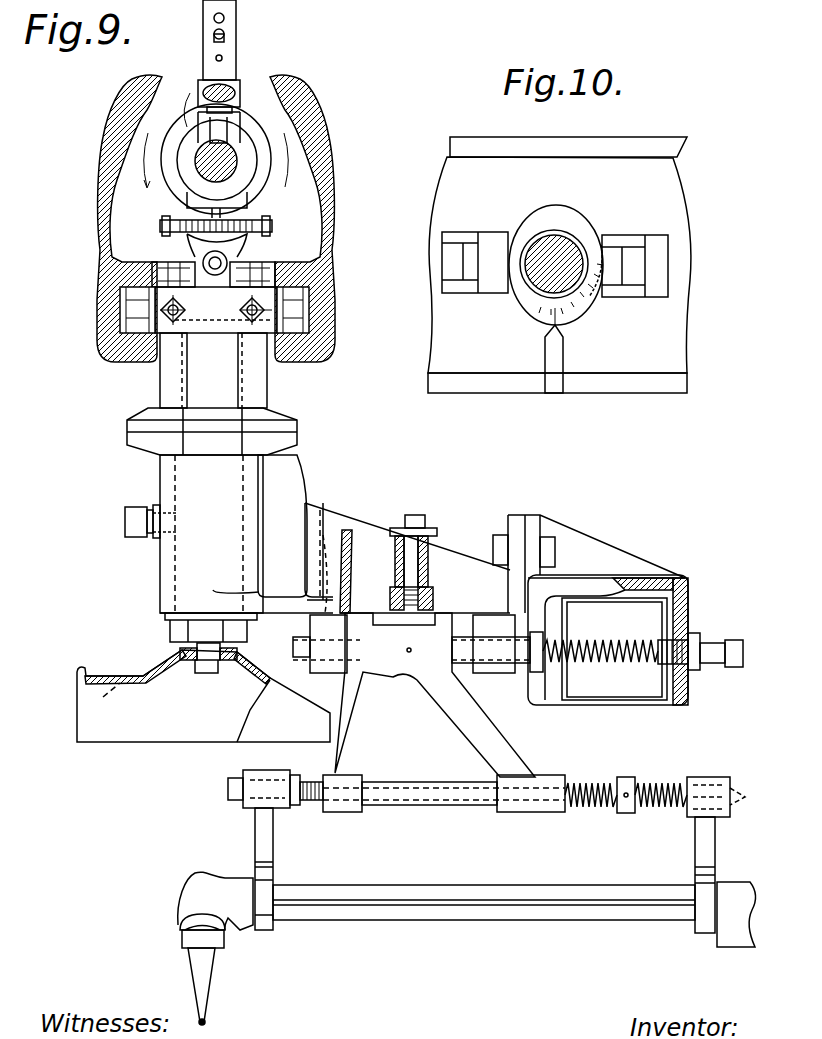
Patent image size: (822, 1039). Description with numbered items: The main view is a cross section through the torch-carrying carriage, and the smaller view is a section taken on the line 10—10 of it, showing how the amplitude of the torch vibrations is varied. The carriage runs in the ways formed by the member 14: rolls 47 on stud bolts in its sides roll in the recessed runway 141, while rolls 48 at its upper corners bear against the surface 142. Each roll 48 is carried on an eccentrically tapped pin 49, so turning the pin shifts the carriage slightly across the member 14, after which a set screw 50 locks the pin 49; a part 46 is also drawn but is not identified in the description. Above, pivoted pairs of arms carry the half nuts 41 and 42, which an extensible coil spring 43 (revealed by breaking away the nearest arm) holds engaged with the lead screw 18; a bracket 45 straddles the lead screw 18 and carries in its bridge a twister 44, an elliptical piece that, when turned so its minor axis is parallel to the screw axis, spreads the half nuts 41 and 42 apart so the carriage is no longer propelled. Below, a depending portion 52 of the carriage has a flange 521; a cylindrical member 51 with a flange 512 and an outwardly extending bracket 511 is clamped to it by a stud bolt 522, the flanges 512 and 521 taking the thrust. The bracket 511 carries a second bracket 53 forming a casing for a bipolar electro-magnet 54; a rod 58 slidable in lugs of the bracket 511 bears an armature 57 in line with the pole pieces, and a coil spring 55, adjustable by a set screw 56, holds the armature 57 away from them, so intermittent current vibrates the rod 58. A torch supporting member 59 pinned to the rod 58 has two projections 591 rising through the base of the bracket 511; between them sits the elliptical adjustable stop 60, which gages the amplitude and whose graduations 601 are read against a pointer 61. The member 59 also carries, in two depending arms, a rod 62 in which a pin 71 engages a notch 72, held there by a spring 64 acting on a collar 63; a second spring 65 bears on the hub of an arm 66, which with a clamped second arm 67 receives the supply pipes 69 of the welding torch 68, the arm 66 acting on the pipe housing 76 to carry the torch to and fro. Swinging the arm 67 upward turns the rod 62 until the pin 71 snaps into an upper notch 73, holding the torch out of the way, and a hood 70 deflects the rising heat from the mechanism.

In FIG. 9, the section line 10 is at (453, 565).
In FIG. 9, the member 14 is at (100, 152).
In FIG. 9, the surface 142 is at (150, 272).
In FIG. 9, the recessed runway 141 is at (120, 305).
In FIG. 9, the lead screw 18 is at (240, 160).
In FIG. 9, the half nut member 41 is at (242, 152).
In FIG. 9, the half nut member 42 is at (196, 140).
In FIG. 9, the extensible coil spring 43 is at (240, 240).
In FIG. 9, the twister 44 is at (240, 115).
In FIG. 9, the bracket 45 is at (230, 118).
In FIG. 9, the pinion 46 is at (195, 262).
In FIG. 9, the roll 47 is at (309, 322).
In FIG. 9, the roll 48 is at (277, 280).
In FIG. 9, the pin 49 is at (165, 352).
In FIG. 9, the set screw 50 is at (250, 315).
In FIG. 9, the cylindrical member 51 is at (165, 578).
In FIG. 9, the bracket 511 is at (330, 535).
In FIG. 10, the bracket 511 is at (633, 380).
In FIG. 9, the flange 512 is at (148, 440).
In FIG. 9, the depending portion 52 is at (268, 408).
In FIG. 9, the flange 521 is at (282, 424).
In FIG. 9, the stud bolt 522 is at (140, 528).
In FIG. 9, the second bracket 53 is at (592, 555).
In FIG. 9, the bipolar electro-magnet 54 is at (665, 683).
In FIG. 9, the coil spring 55 is at (610, 660).
In FIG. 9, the set screw 56 is at (765, 628).
In FIG. 9, the armature 57 is at (536, 655).
In FIG. 9, the rod 58 is at (302, 668).
In FIG. 9, the torch supporting member 59 is at (370, 560).
In FIG. 9, the projection 591 is at (440, 555).
In FIG. 10, the projection 591 is at (470, 270).
In FIG. 9, the adjustable stop 60 is at (418, 545).
In FIG. 10, the adjustable stop 60 is at (577, 225).
In FIG. 10, the graduations 601 is at (583, 307).
In FIG. 10, the pointer 61 is at (555, 360).
In FIG. 9, the rod 62 is at (437, 792).
In FIG. 9, the collar 63 is at (627, 812).
In FIG. 9, the spring 64 is at (592, 810).
In FIG. 9, the second spring 65 is at (655, 810).
In FIG. 9, the arm 66 is at (712, 838).
In FIG. 9, the second arm 67 is at (268, 832).
In FIG. 9, the welding torch 68 is at (238, 912).
In FIG. 9, the supply pipes 69 is at (495, 895).
In FIG. 9, the hood 70 is at (188, 722).
In FIG. 9, the pin 71 is at (323, 797).
In FIG. 9, the notch 72 is at (325, 805).
In FIG. 9, the second notch 73 is at (322, 782).
In FIG. 9, the member 76 is at (745, 915).